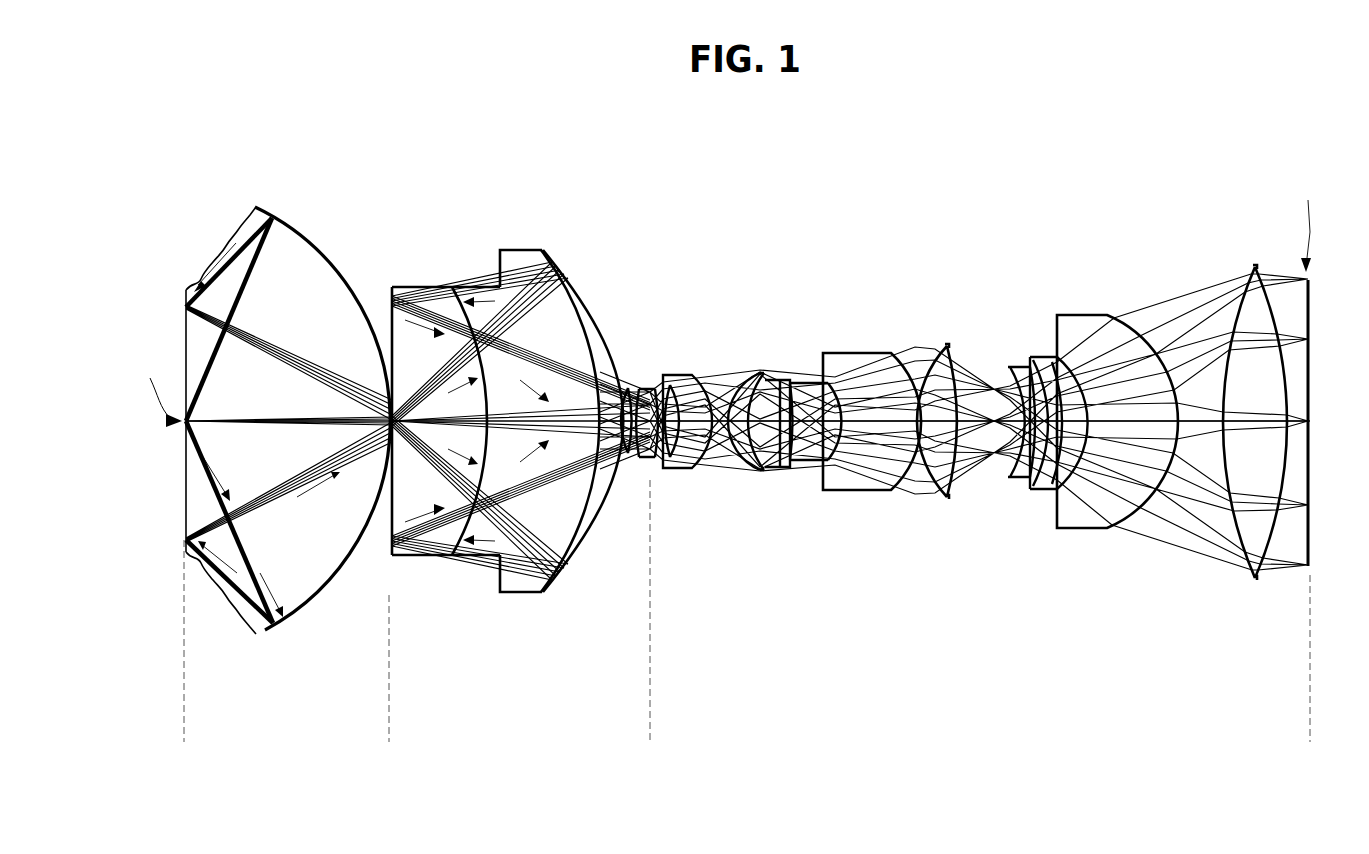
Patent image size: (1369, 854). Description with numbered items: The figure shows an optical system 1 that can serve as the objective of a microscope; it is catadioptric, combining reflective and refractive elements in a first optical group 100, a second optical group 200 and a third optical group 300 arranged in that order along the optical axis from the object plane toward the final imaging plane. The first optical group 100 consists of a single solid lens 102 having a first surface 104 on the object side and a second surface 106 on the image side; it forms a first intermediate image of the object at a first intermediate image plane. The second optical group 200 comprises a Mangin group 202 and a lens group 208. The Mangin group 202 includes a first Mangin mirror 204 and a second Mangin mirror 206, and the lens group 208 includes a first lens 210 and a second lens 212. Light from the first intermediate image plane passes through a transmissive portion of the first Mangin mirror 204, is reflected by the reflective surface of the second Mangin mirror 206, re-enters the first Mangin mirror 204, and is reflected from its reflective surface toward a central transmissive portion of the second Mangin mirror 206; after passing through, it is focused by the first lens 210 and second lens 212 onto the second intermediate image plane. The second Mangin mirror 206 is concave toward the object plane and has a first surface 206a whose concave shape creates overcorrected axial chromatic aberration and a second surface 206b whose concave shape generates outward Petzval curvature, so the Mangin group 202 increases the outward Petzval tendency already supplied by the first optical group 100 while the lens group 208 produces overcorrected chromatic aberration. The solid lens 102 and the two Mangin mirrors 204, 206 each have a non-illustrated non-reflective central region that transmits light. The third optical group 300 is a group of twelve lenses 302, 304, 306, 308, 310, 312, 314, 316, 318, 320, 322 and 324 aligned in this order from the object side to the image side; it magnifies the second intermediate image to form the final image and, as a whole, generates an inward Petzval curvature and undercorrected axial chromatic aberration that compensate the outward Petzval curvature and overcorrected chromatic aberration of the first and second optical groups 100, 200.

The optical system 1 is at (360, 130).
The first optical group 100 is at (388, 726).
The solid lens 102 is at (291, 325).
The first surface 104 is at (187, 266).
The second surface 106 is at (345, 300).
The second optical group 200 is at (650, 726).
The Mangin group 202 is at (432, 216).
The first Mangin mirror 204 is at (448, 282).
The second Mangin mirror 206 is at (504, 270).
The first surface 206a is at (560, 538).
The second surface 206b is at (603, 514).
The lens group 208 is at (561, 216).
The first lens 210 is at (618, 382).
The second lens 212 is at (642, 382).
The third optical group 300 is at (1310, 726).
The lens 302 is at (654, 372).
The lens 304 is at (673, 372).
The lens 306 is at (682, 372).
The lens 308 is at (745, 372).
The lens 310 is at (777, 376).
The lens 312 is at (803, 376).
The lens 314 is at (875, 351).
The lens 316 is at (943, 344).
The lens 318 is at (1012, 365).
The lens 320 is at (1043, 355).
The lens 322 is at (1087, 313).
The lens 324 is at (1252, 265).